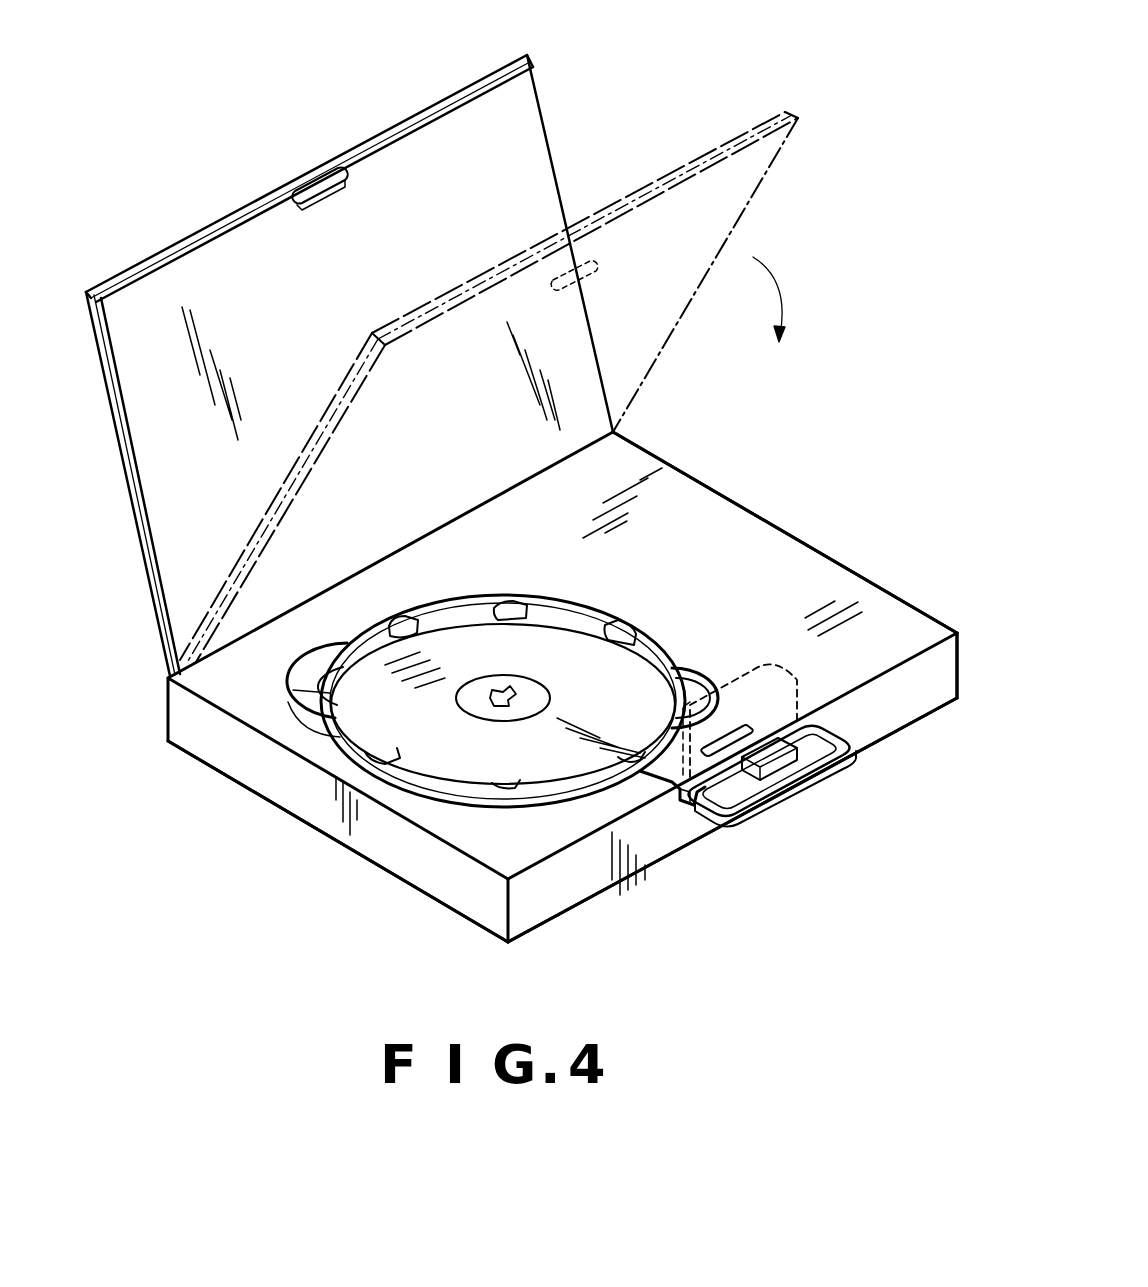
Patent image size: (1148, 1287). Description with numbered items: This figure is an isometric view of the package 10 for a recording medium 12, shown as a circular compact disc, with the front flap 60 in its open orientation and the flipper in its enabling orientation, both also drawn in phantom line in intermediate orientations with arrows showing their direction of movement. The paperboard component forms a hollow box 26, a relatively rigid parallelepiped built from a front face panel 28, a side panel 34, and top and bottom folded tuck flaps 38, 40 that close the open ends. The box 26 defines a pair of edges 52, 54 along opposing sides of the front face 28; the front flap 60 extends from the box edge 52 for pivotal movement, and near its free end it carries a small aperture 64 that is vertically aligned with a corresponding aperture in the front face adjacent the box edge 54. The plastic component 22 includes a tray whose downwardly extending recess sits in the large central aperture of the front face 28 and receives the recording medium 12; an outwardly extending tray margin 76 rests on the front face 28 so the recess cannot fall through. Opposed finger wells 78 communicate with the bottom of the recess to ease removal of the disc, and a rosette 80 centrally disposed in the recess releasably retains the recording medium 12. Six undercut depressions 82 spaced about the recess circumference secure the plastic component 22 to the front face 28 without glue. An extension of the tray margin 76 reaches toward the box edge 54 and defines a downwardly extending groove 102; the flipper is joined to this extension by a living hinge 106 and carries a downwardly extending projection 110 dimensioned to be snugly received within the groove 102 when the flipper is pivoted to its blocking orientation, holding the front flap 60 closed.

The package 10 is at (254, 801).
The recording medium 12 is at (462, 757).
The plastic component 22 is at (809, 807).
The hollow box 26 is at (568, 908).
The front face panel 28 is at (727, 543).
The side panel 34 is at (627, 850).
The top folded tuck flap 38 is at (700, 480).
The bottom folded tuck flap 40 is at (457, 868).
The box edge 52 is at (545, 658).
The box edge 54 is at (858, 712).
The front flap 60 is at (442, 98).
The small aperture 64 is at (321, 190).
The tray margin 76 is at (358, 633).
The finger wells 78 is at (278, 693).
The rosette 80 is at (535, 693).
The depressions 82 is at (630, 625).
The extension groove 102 is at (745, 725).
The living hinge 106 is at (690, 792).
The projection 110 is at (837, 780).